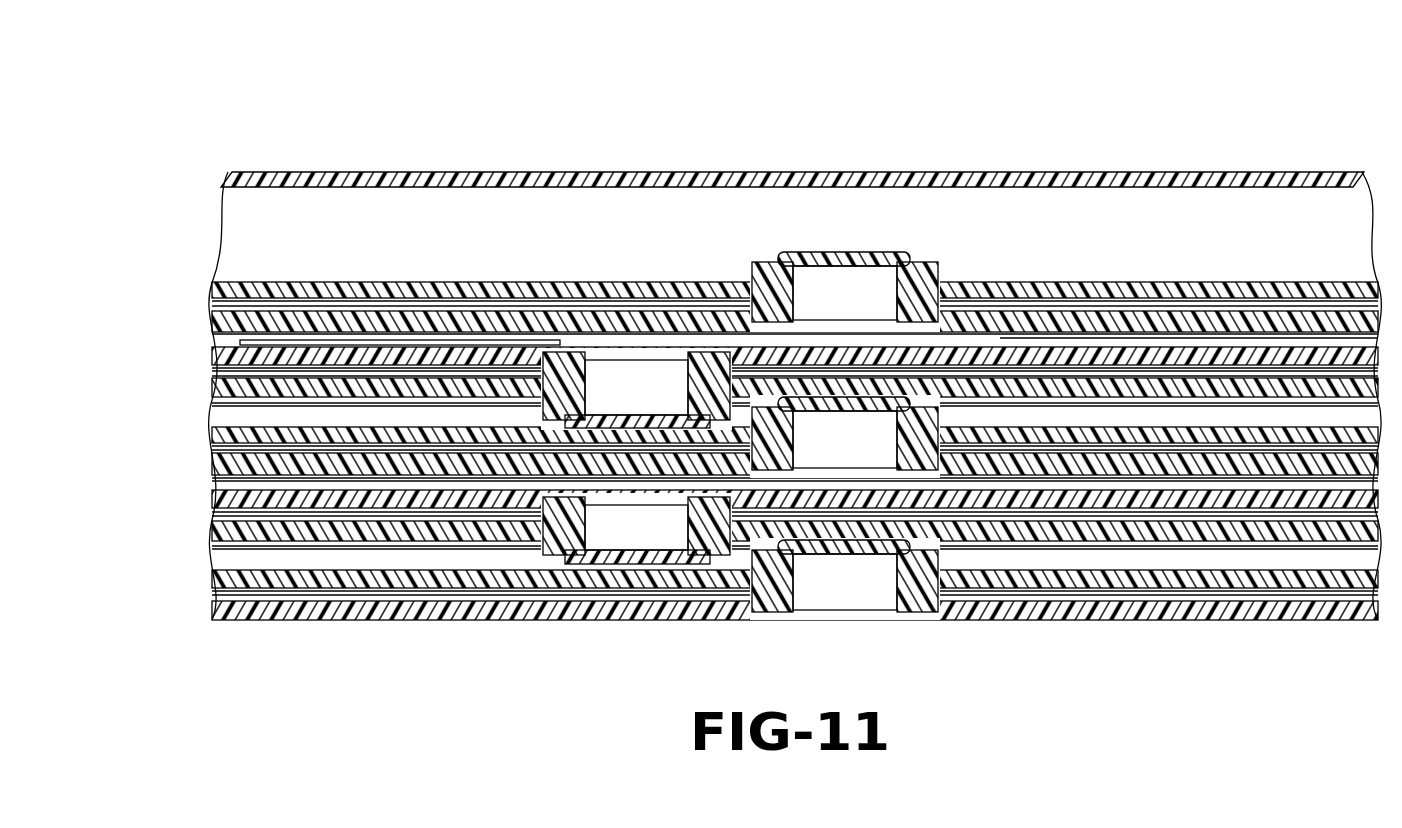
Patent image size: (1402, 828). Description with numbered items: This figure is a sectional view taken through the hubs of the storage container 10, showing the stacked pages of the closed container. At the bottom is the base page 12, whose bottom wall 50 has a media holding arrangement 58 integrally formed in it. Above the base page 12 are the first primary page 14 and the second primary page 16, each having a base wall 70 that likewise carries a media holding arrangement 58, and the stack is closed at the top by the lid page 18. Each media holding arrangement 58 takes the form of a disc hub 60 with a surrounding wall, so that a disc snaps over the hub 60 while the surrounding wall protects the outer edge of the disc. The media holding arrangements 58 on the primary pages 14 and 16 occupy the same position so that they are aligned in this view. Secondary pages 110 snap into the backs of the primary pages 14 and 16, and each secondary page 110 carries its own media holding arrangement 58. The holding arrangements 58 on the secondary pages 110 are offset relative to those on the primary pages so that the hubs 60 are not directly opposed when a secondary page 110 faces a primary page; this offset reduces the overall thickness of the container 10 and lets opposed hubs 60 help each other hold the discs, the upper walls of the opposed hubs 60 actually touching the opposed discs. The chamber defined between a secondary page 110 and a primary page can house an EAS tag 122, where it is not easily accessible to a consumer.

The storage container 10 is at (1133, 104).
The base page 12 is at (795, 653).
The first primary page 14 is at (207, 456).
The second primary page 16 is at (734, 456).
The lid page 18 is at (460, 168).
The bottom wall 50 is at (1105, 622).
The media holding arrangement 58 is at (745, 402).
The hub 60 is at (848, 396).
The base wall 70 is at (1122, 318).
The secondary page 110 is at (207, 352).
The EAS tag 122 is at (373, 340).